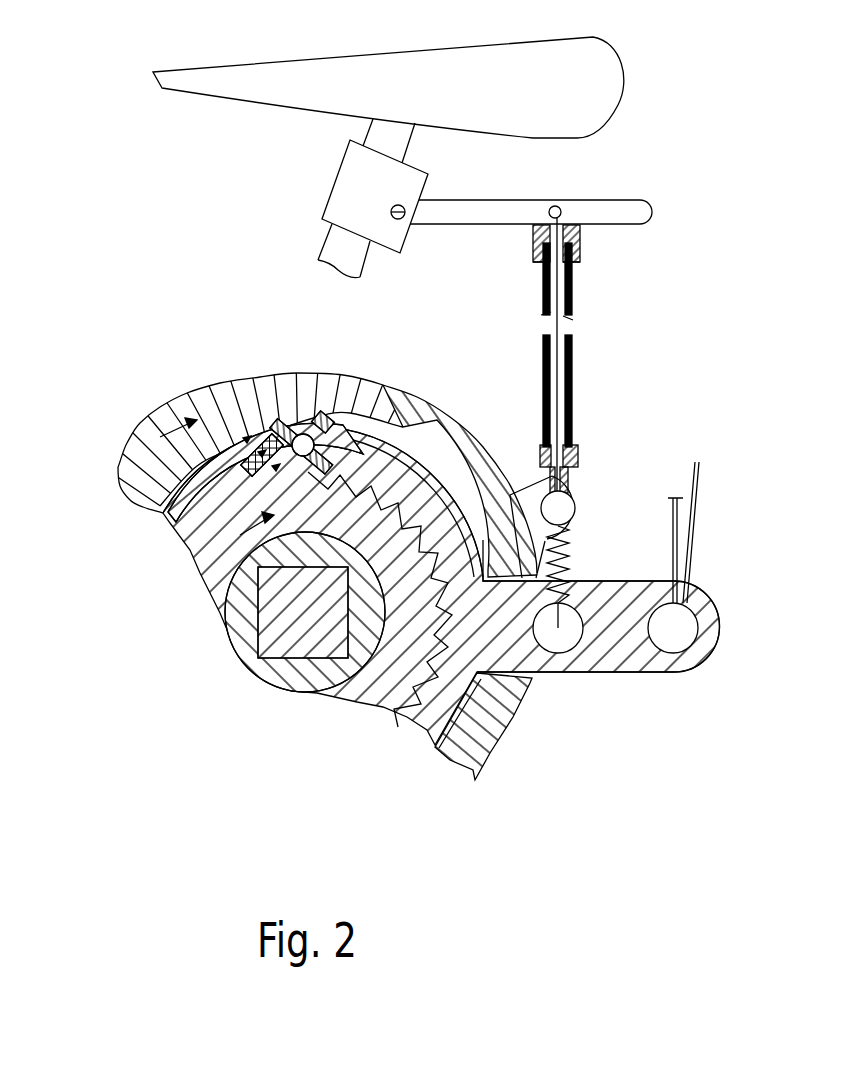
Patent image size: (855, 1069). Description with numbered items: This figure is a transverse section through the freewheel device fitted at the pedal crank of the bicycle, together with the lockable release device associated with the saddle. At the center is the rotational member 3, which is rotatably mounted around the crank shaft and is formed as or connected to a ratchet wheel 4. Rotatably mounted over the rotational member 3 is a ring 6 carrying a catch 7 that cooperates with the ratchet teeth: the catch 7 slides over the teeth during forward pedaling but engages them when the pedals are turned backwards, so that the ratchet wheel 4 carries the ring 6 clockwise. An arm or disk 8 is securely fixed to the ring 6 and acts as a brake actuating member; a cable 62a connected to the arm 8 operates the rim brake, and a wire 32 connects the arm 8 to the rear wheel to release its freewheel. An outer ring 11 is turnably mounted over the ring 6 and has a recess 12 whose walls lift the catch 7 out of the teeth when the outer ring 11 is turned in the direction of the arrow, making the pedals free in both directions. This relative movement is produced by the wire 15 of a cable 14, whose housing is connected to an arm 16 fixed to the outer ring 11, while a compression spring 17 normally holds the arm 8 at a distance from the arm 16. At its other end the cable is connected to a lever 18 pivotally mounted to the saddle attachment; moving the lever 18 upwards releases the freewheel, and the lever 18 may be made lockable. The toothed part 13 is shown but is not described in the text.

The rotational member 3 is at (218, 573).
The ratchet wheel 4 is at (207, 565).
The ring 6 is at (173, 517).
The catch 7 is at (327, 413).
The arm or disk 8 is at (614, 672).
The outer ring 11 is at (137, 458).
The recess 12 is at (308, 403).
The toothed segment 13 is at (256, 385).
The cable 14 is at (570, 384).
The wire 15 is at (557, 408).
The arm 16 is at (578, 507).
The compression spring 17 is at (566, 552).
The lever 18 is at (640, 203).
The wire 32 is at (697, 480).
The cable 62a is at (673, 498).